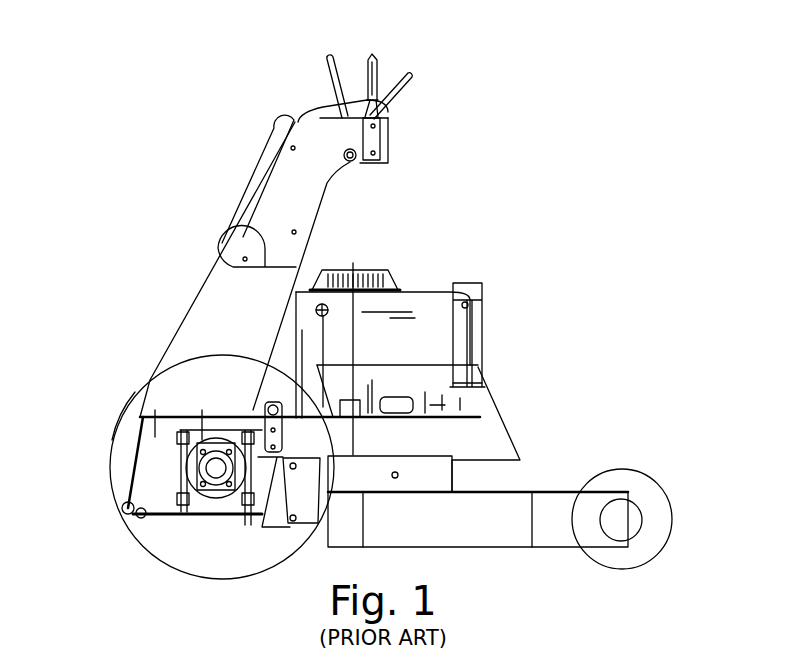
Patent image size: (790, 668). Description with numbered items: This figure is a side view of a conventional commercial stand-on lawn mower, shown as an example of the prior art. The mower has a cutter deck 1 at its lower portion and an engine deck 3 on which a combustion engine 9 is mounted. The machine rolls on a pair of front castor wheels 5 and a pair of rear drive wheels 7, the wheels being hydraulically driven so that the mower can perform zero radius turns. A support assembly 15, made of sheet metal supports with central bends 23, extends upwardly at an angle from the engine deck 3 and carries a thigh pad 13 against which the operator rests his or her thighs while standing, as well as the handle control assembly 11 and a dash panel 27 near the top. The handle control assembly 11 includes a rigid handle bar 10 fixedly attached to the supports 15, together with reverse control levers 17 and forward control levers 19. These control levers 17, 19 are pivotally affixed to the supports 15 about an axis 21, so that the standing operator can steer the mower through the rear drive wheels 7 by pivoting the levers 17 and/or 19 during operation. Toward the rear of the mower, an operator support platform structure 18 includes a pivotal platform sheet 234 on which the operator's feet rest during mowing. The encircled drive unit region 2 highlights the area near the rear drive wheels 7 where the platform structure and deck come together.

The cutter deck 1 is at (500, 503).
The drive unit 2 is at (174, 383).
The engine deck 3 is at (385, 440).
The front castor wheels 5 is at (655, 503).
The rear drive wheels 7 is at (135, 391).
The combustion engine 9 is at (426, 322).
The rigid handle bar 10 is at (372, 54).
The handle control assembly 11 is at (433, 58).
The thigh pad 13 is at (253, 188).
The support assembly 15 is at (248, 315).
The reverse control levers 17 is at (412, 76).
The operator support platform structure 18 is at (155, 459).
The forward control levers 19 is at (325, 80).
The axis 21 is at (351, 162).
The central bends 23 is at (247, 232).
The dash panel 27 is at (322, 108).
The pivotal platform sheet 234 is at (147, 495).